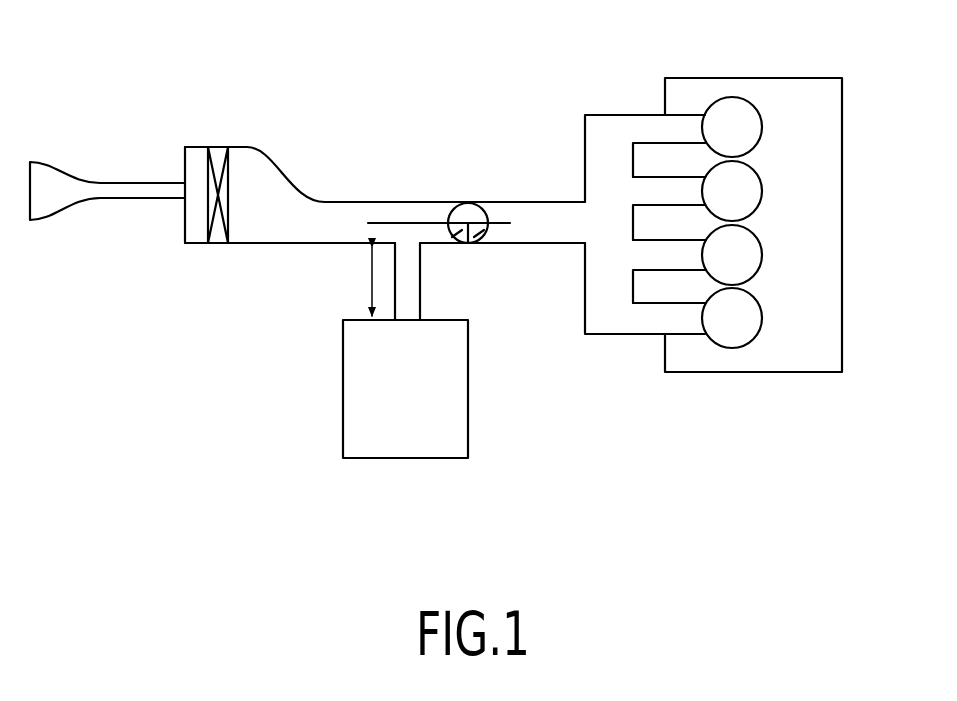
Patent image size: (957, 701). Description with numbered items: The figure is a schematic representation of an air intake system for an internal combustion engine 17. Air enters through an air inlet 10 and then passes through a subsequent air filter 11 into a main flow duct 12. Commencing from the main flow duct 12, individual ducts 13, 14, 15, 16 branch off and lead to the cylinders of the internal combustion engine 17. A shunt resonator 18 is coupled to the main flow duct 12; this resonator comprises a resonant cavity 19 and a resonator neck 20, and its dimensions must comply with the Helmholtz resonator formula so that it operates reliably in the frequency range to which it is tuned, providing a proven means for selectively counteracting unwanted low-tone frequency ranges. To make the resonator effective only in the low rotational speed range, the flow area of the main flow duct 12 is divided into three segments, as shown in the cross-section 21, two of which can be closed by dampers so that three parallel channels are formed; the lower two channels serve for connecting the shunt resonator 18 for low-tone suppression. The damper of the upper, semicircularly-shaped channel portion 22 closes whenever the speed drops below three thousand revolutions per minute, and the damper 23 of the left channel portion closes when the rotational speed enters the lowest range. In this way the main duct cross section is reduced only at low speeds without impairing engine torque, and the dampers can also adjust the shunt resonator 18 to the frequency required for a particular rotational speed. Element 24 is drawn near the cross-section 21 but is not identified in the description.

The air inlet 10 is at (120, 197).
The air filter 11 is at (219, 235).
The main flow duct 12 is at (330, 212).
The individual duct 13 is at (667, 130).
The individual duct 14 is at (657, 190).
The individual duct 15 is at (655, 257).
The individual duct 16 is at (648, 317).
The internal combustion engine 17 is at (760, 76).
The shunt resonator 18 is at (331, 352).
The resonant cavity 19 is at (457, 420).
The resonator neck 20 is at (407, 303).
The cross-section 21 is at (462, 204).
The upper semicircularly-shaped channel portion 22 is at (477, 212).
The damper of the left channel portion 23 is at (452, 243).
The throttle valve seal 24 is at (480, 238).